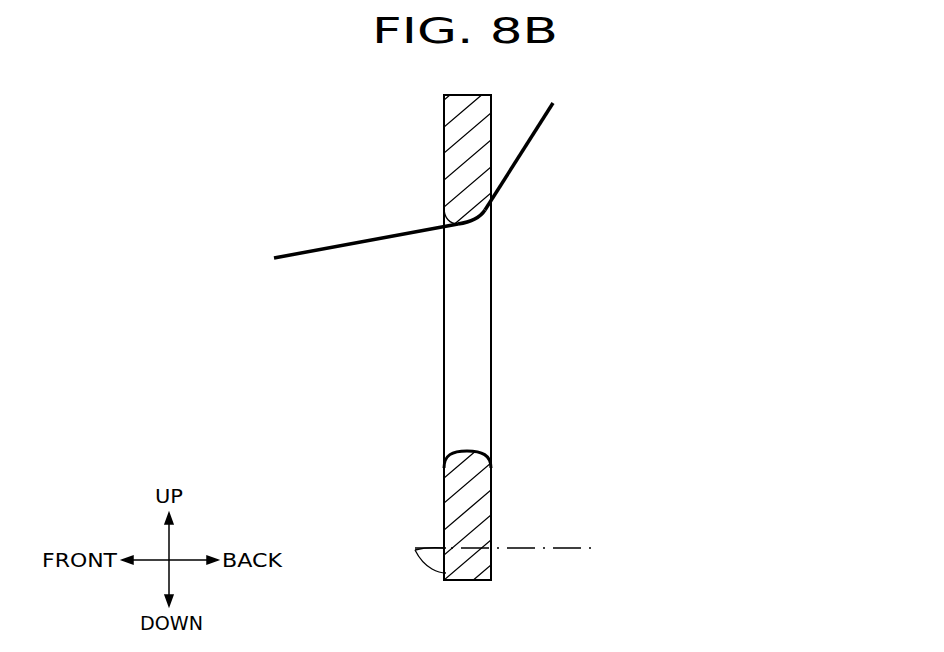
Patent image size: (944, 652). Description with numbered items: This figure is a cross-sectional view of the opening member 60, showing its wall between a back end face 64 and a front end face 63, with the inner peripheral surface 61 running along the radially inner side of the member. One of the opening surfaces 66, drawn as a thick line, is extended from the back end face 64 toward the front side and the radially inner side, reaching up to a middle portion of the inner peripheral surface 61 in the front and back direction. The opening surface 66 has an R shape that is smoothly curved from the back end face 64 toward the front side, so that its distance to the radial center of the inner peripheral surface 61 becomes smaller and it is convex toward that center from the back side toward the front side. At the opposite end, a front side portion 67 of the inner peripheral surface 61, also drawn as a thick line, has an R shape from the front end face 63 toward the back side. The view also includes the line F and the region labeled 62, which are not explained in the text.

The opening member 60 is at (577, 158).
The inner peripheral surface 61 is at (458, 228).
The bar body 62 is at (444, 403).
The front end face 63 is at (522, 554).
The back end face 64 is at (490, 148).
The opening surface 66 is at (491, 452).
The front side portion 67 is at (446, 452).
The force direction line F is at (316, 248).